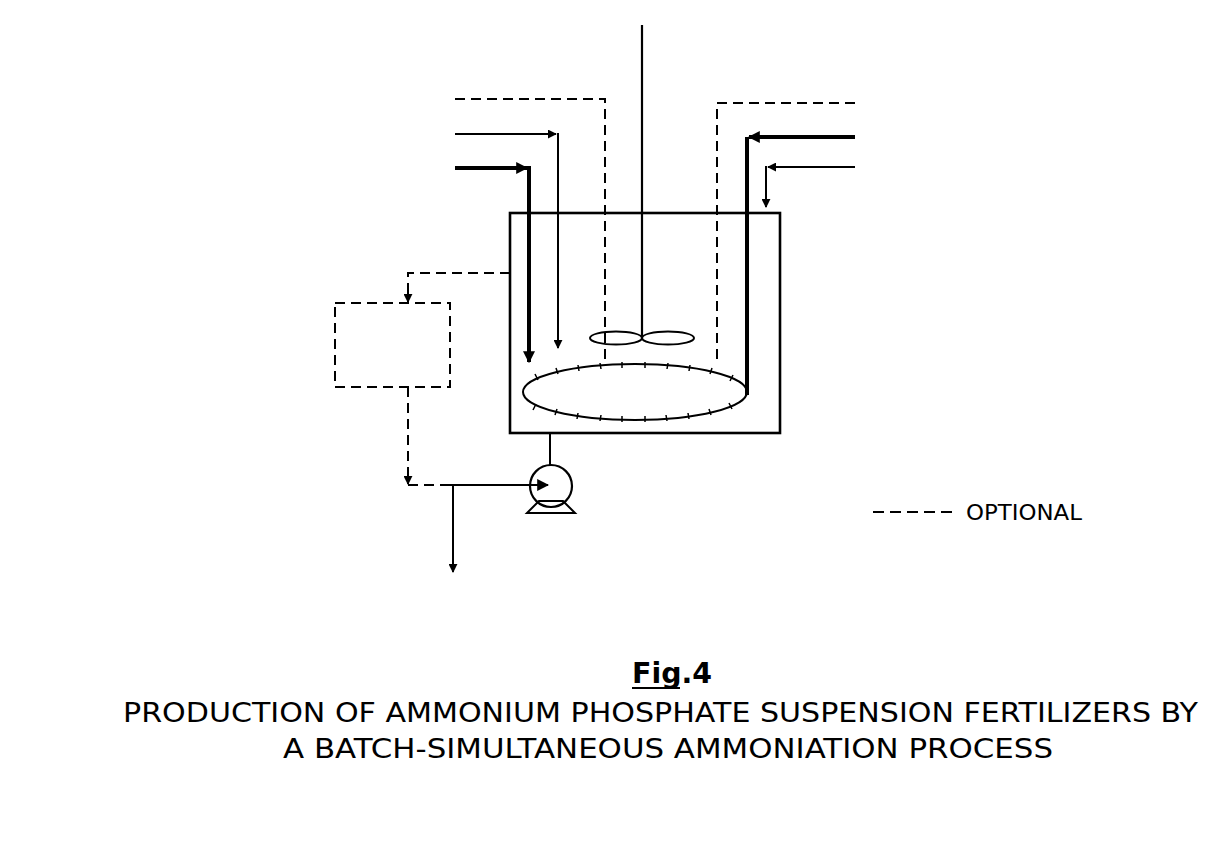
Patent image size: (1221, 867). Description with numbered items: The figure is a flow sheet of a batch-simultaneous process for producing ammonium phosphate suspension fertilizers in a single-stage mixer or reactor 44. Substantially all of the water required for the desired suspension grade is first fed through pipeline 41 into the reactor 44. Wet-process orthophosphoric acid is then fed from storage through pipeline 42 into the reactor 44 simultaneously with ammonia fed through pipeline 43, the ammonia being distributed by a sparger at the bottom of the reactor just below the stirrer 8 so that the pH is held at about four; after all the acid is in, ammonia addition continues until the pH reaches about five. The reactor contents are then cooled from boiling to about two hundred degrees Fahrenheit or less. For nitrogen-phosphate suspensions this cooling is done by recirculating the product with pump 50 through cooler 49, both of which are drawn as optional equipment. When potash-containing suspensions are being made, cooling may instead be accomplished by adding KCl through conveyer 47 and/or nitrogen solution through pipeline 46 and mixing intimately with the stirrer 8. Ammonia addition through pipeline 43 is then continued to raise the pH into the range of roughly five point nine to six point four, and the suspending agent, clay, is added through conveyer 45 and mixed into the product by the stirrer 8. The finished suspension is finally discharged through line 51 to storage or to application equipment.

The stirrer 8 is at (642, 271).
The pipeline 41 is at (511, 134).
The pipeline 42 is at (507, 168).
The pipeline 43 is at (762, 137).
The reactor 44 is at (782, 356).
The conveyer 45 is at (826, 167).
The pipeline 46 is at (528, 99).
The conveyer 47 is at (756, 103).
The cooler 49 is at (335, 356).
The pump 50 is at (572, 477).
The line 51 is at (453, 522).